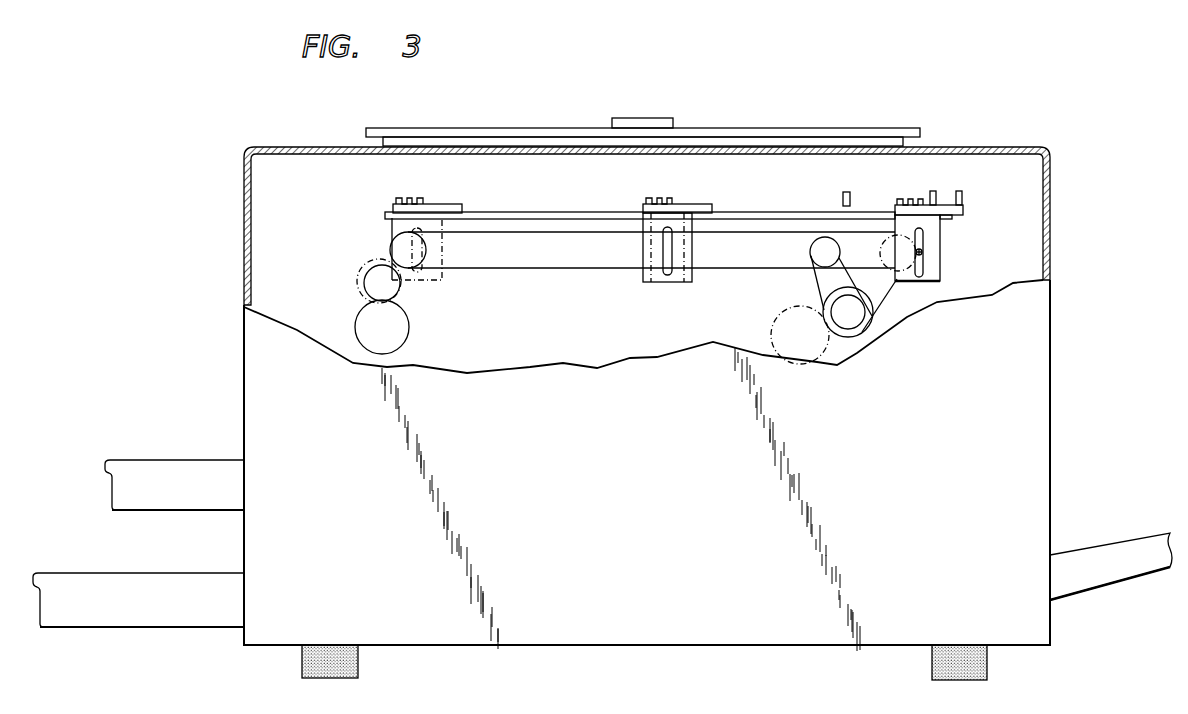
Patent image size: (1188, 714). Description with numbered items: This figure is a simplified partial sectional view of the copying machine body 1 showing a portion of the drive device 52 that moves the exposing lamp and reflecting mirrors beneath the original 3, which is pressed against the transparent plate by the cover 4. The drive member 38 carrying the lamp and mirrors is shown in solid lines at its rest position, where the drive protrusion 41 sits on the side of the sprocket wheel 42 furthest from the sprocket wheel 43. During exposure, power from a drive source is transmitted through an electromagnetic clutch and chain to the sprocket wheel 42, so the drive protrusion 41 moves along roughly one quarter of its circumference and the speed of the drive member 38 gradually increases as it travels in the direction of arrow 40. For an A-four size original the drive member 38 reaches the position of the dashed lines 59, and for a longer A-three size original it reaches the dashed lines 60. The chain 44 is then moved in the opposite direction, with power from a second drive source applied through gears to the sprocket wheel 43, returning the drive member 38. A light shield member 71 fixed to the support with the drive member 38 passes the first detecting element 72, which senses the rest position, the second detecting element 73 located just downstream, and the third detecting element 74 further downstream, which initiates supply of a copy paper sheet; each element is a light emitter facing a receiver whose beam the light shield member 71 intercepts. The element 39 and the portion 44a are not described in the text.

The copying machine body 1 is at (1050, 181).
The original 3 is at (577, 145).
The cover 4 is at (496, 133).
The drive member 38 is at (938, 233).
The slot 39 is at (923, 240).
The arrow 40 is at (555, 285).
The drive protrusion 41 is at (927, 258).
The sprocket wheel 42 is at (898, 262).
The sprocket wheel 43 is at (397, 248).
The chain 44 is at (476, 232).
The lower run of belt 44a is at (522, 270).
The drive device 52 is at (543, 195).
The dashed lines 59 is at (698, 200).
The dashed lines 60 is at (400, 198).
The light shield member 71 is at (963, 212).
The first detecting element 72 is at (961, 192).
The second detecting element 73 is at (932, 192).
The third detecting element 74 is at (843, 190).